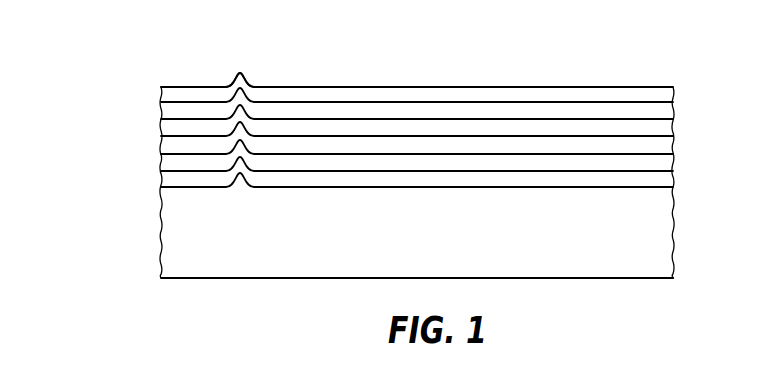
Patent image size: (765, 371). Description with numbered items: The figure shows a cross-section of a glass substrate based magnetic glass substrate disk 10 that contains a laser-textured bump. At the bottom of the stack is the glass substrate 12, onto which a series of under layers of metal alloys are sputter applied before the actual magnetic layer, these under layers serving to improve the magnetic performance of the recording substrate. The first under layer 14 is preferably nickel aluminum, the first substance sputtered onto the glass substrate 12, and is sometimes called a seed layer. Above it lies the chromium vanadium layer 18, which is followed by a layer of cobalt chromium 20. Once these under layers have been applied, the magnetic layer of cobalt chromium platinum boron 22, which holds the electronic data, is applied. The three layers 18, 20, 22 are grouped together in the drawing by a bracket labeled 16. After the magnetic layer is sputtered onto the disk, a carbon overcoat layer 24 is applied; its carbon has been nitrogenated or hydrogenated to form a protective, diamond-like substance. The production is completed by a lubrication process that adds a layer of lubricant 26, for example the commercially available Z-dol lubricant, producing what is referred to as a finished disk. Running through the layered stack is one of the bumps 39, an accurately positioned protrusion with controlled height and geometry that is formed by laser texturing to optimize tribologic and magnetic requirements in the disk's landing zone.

The magnetic glass substrate disk 10 is at (97, 78).
The glass substrate 12 is at (673, 222).
The first under layer 14 is at (675, 180).
The active region 16 is at (683, 120).
The chromium vanadium layer 18 is at (163, 161).
The cobalt chromium layer 20 is at (163, 146).
The magnetic layer 22 is at (163, 128).
The carbon overcoat layer 24 is at (675, 113).
The layer of lubricant 26 is at (623, 87).
The bumps 39 is at (240, 73).